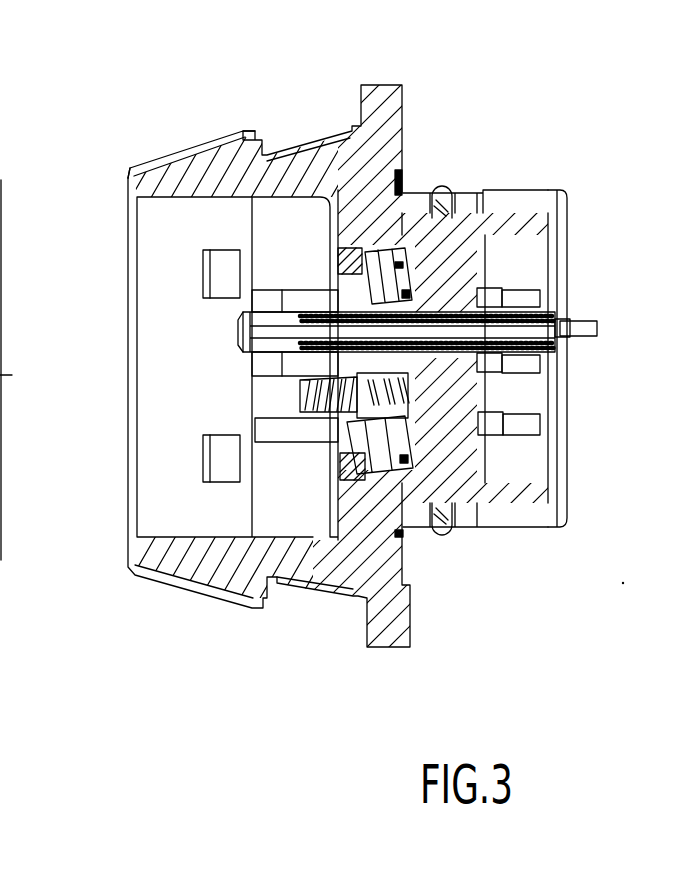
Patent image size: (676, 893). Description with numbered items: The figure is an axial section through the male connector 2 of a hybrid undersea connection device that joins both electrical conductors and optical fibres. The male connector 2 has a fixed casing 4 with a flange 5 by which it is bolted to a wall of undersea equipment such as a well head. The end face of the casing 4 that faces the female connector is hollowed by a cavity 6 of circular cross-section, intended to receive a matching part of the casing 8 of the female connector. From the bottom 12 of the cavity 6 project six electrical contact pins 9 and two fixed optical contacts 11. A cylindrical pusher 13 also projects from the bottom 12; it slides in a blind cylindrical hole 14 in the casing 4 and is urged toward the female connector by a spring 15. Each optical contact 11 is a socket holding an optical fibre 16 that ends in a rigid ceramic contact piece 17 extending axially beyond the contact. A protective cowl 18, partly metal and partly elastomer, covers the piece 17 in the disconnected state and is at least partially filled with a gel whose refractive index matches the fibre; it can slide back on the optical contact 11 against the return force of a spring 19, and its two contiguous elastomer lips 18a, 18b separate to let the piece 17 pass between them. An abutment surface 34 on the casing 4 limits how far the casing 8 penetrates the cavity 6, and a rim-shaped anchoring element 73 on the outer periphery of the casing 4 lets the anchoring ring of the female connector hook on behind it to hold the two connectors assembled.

The male connector 2 is at (470, 113).
The casing 4 is at (506, 190).
The flange 5 is at (378, 95).
The cavity 6 is at (180, 538).
The casing of the female connector 8 is at (402, 364).
The electrical contact pins 9 is at (528, 283).
The fixed optical contacts 11 is at (578, 318).
The bottom of the cavity 12 is at (322, 440).
The cylindrical pusher 13 is at (300, 410).
The blind cylindrical hole 14 is at (393, 440).
The spring 15 is at (318, 448).
The optical fibre 16 is at (585, 330).
The contact piece 17 is at (258, 291).
The protective cowl 18 is at (245, 354).
The lip 18a is at (240, 318).
The lip 18b is at (245, 345).
The spring 19 is at (318, 310).
The abutment surface 34 is at (128, 177).
The anchoring element 73 is at (256, 130).